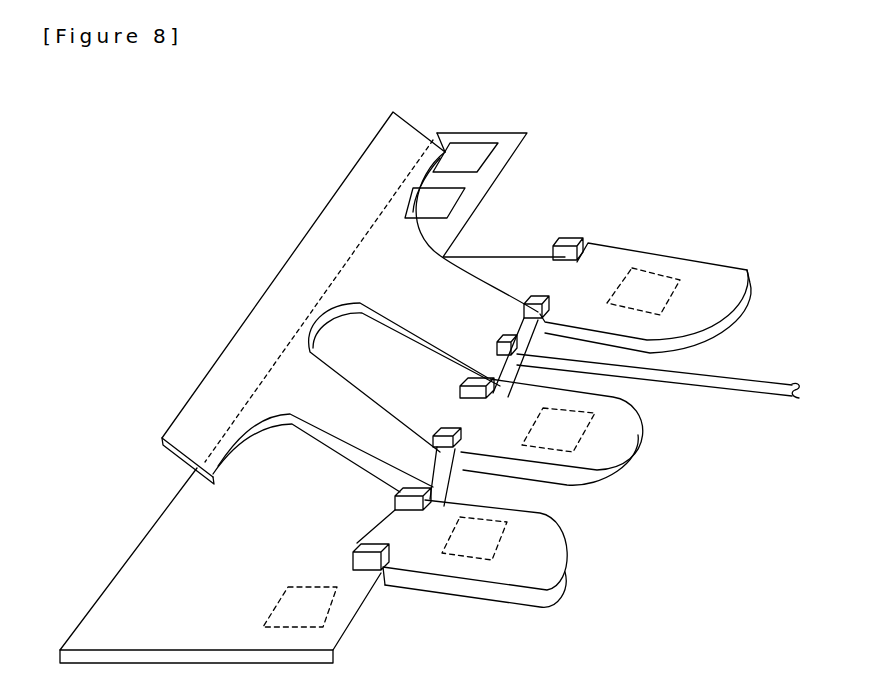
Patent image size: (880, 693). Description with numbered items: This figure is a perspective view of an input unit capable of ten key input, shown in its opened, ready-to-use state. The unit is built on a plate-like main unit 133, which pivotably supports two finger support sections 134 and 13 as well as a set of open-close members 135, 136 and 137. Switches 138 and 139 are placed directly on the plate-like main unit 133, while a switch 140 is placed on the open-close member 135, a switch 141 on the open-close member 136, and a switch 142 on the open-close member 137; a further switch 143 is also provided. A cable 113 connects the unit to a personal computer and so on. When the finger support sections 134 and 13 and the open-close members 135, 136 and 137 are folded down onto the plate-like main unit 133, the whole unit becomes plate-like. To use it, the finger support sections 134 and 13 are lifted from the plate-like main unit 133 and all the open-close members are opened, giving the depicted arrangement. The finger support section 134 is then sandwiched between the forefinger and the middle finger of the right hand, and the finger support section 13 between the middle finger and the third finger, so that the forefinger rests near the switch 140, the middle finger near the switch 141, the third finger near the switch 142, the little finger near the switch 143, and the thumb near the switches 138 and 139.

The finger support section 13 is at (368, 438).
The cable 113 is at (735, 387).
The plate-like main unit 133 is at (130, 597).
The finger support section 134 is at (457, 327).
The open-close member 135 is at (600, 258).
The open-close member 136 is at (610, 452).
The open-close member 137 is at (528, 575).
The switch 138 is at (473, 162).
The switch 139 is at (445, 208).
The switch 140 is at (653, 285).
The switch 141 is at (590, 420).
The switch 142 is at (483, 543).
The switch 143 is at (303, 613).